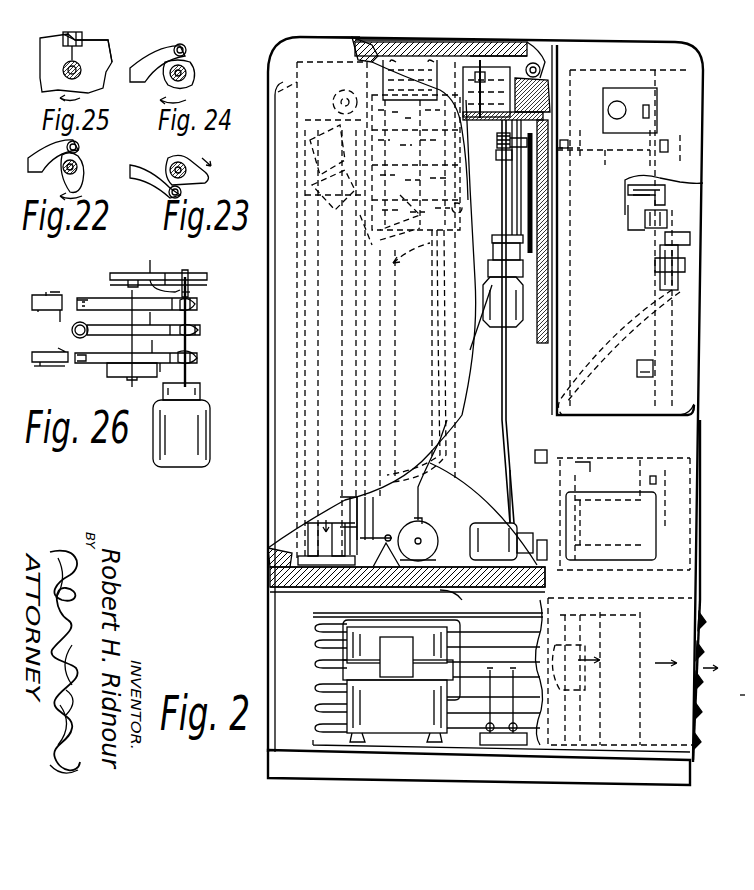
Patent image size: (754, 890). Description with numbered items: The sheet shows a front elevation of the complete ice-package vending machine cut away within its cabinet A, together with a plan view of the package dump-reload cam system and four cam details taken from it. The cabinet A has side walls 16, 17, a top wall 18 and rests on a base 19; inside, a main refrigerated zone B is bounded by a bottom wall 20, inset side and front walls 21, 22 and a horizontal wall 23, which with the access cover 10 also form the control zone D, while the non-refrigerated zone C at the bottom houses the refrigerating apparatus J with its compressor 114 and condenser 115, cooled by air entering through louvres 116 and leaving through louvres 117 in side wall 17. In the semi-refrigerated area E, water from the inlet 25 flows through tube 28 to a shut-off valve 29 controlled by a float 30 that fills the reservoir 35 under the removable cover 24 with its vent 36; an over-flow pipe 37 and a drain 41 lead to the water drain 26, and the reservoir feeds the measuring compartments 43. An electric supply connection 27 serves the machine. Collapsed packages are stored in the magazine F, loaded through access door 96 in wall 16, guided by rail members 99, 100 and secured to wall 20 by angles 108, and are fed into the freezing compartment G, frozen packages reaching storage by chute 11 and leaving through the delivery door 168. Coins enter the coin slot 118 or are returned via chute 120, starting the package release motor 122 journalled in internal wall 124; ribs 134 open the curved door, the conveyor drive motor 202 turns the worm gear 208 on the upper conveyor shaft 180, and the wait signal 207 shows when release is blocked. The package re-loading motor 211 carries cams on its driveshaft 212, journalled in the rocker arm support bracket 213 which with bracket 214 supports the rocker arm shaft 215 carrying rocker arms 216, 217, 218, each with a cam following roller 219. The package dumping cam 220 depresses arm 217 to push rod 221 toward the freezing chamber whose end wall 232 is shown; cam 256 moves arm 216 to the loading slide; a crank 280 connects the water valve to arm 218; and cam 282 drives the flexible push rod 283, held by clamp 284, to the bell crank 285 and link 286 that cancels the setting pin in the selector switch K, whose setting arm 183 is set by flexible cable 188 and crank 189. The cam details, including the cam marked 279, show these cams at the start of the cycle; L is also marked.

In FIG. 2, the access cover 10 is at (690, 186).
In FIG. 2, the delivery chute 11 is at (450, 465).
In FIG. 2, the side wall 16 is at (268, 565).
In FIG. 2, the side wall 17 is at (698, 495).
In FIG. 2, the top wall 18 is at (345, 36).
In FIG. 2, the base 19 is at (690, 775).
In FIG. 2, the bottom wall 20 is at (434, 553).
In FIG. 2, the inset side wall 21 is at (507, 358).
In FIG. 26, the inset front wall 22 is at (182, 373).
In FIG. 26, the horizontal wall 23 is at (172, 344).
In FIG. 2, the horizontal wall 23 is at (694, 405).
In FIG. 26, the removable cover 24 is at (168, 320).
In FIG. 2, the removable cover 24 is at (496, 42).
In FIG. 26, the water inlet 25 is at (162, 273).
In FIG. 2, the water inlet 25 is at (499, 143).
In FIG. 2, the water drain 26 is at (338, 510).
In FIG. 2, the electric supply connection 27 is at (546, 455).
In FIG. 2, the tube 28 is at (503, 93).
In FIG. 2, the shut-off valve 29 is at (480, 85).
In FIG. 2, the float 30 is at (532, 62).
In FIG. 2, the pre-chilling and storage reservoir 35 is at (548, 92).
In FIG. 2, the vent 36 is at (478, 32).
In FIG. 2, the over-flow pipe 37 is at (552, 78).
In FIG. 2, the drain 41 is at (440, 590).
In FIG. 2, the measuring compartments 43 is at (405, 80).
In FIG. 2, the access door 96 is at (262, 168).
In FIG. 26, the rail member 99 is at (52, 290).
In FIG. 26, the rail member 100 is at (62, 348).
In FIG. 26, the angles 108 is at (42, 366).
In FIG. 2, the angles 108 is at (356, 592).
In FIG. 2, the compressor 114 is at (352, 724).
In FIG. 2, the condenser 115 is at (640, 710).
In FIG. 2, the louvres 116 is at (318, 640).
In FIG. 2, the louvres 117 is at (717, 680).
In FIG. 2, the coin slot 118 is at (650, 110).
In FIG. 2, the coin return chute 120 is at (640, 376).
In FIG. 2, the package release motor 122 is at (506, 522).
In FIG. 2, the internal wall 124 is at (513, 482).
In FIG. 2, the ribs 134 is at (640, 470).
In FIG. 2, the delivery door 168 is at (650, 550).
In FIG. 2, the upper conveyor shaft 180 is at (585, 155).
In FIG. 2, the setting arm 183 is at (648, 222).
In FIG. 2, the flexible cable 188 is at (682, 266).
In FIG. 2, the crank 189 is at (660, 206).
In FIG. 2, the conveyor drive motor 202 is at (500, 322).
In FIG. 2, the wait signal 207 is at (622, 102).
In FIG. 2, the worm gear 208 is at (504, 165).
In FIG. 26, the package re-loading motor 211 is at (172, 464).
In FIG. 2, the package re-loading motor 211 is at (416, 524).
In FIG. 25, the driveshaft 212 is at (64, 72).
In FIG. 24, the driveshaft 212 is at (185, 70).
In FIG. 22, the driveshaft 212 is at (80, 165).
In FIG. 23, the driveshaft 212 is at (174, 162).
In FIG. 26, the driveshaft 212 is at (192, 274).
In FIG. 25, the rocker arm support bracket 213 is at (95, 45).
In FIG. 26, the rocker arm support bracket 213 is at (175, 268).
In FIG. 26, the rocker arm bracket 214 is at (132, 380).
In FIG. 26, the rocker arm shaft 215 is at (133, 275).
In FIG. 22, the rocker arm 216 is at (40, 172).
In FIG. 26, the rocker arm 216 is at (118, 354).
In FIG. 23, the rocker arm 217 is at (152, 184).
In FIG. 26, the rocker arm 217 is at (118, 328).
In FIG. 24, the rocker arm 218 is at (160, 85).
In FIG. 26, the rocker arm 218 is at (100, 300).
In FIG. 24, the cam following roller 219 is at (186, 48).
In FIG. 22, the cam following roller 219 is at (79, 147).
In FIG. 23, the cam following roller 219 is at (170, 197).
In FIG. 23, the package dumping cam 220 is at (205, 182).
In FIG. 26, the package dumping cam 220 is at (198, 330).
In FIG. 2, the push rod 221 is at (388, 475).
In FIG. 2, the end wall 232 is at (375, 503).
In FIG. 22, the cam 256 is at (84, 182).
In FIG. 26, the cam 256 is at (198, 358).
In FIG. 24, the cam 279 is at (198, 82).
In FIG. 26, the cam 279 is at (198, 306).
In FIG. 2, the crank 280 is at (360, 95).
In FIG. 25, the cam 282 is at (90, 92).
In FIG. 26, the cam 282 is at (160, 280).
In FIG. 25, the flexible push rod 283 is at (72, 52).
In FIG. 25, the clamp 284 is at (63, 34).
In FIG. 2, the bell crank 285 is at (504, 235).
In FIG. 2, the link 286 is at (520, 265).
In FIG. 2, the cabinet A is at (690, 450).
In FIG. 2, the main refrigerated zone B is at (496, 430).
In FIG. 2, the non-refrigerated zone C is at (285, 602).
In FIG. 2, the control zone D is at (701, 212).
In FIG. 2, the semi-refrigerated area E is at (378, 42).
In FIG. 2, the package storage magazine F is at (266, 547).
In FIG. 2, the freezing compartment G is at (320, 108).
In FIG. 2, the refrigerating apparatus J is at (345, 706).
In FIG. 2, the selector and control means K is at (701, 238).
In FIG. 2, the louver L is at (744, 710).